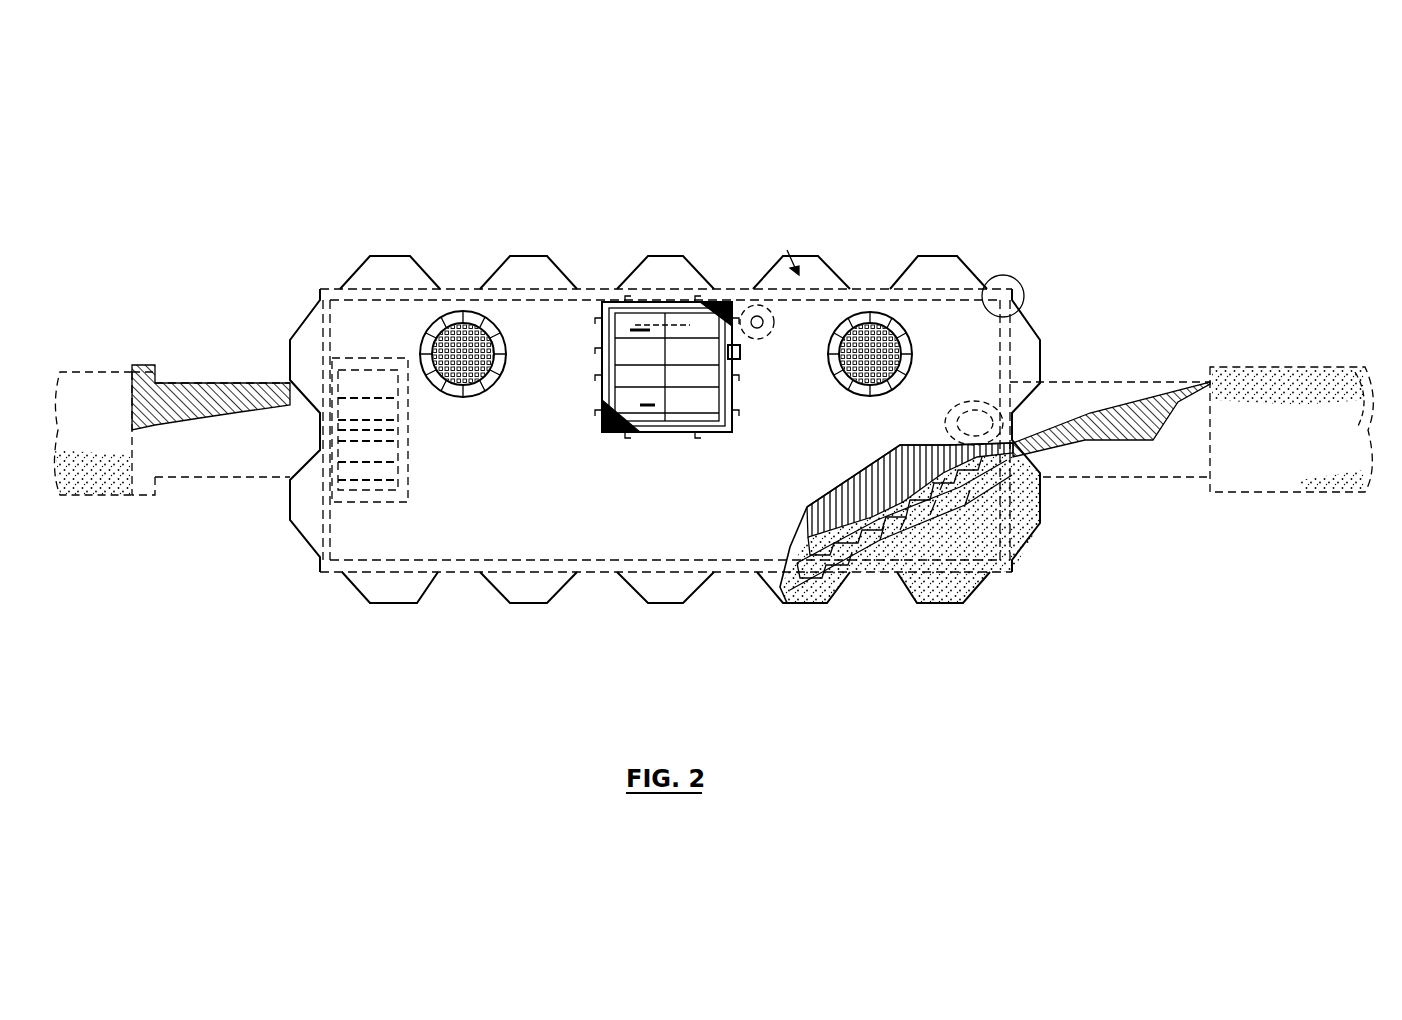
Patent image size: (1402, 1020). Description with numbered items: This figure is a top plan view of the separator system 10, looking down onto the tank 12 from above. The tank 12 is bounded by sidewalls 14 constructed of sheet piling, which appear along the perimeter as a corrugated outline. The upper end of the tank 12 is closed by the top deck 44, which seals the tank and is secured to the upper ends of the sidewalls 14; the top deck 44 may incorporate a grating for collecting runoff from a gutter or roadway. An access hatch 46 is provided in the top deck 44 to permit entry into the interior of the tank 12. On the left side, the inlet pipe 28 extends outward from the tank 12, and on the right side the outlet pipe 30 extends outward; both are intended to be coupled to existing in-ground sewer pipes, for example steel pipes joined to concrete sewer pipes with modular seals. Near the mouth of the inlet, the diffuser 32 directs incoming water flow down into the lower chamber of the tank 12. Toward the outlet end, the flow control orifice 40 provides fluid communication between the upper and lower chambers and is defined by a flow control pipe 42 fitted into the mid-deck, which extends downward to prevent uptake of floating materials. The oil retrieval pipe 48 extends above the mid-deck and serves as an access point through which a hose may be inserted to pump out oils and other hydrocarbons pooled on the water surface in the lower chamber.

The separator system 10 is at (290, 132).
The tank 12 is at (291, 282).
The sidewalls 14 is at (430, 272).
The inlet pipe 28 is at (225, 465).
The outlet pipe 30 is at (1148, 465).
The diffuser 32 is at (398, 470).
The flow control orifice 40 is at (947, 424).
The flow control pipe 42 is at (973, 413).
The top deck 44 is at (537, 523).
The access hatches 46 is at (680, 432).
The oil retrieval pipe 48 is at (757, 328).